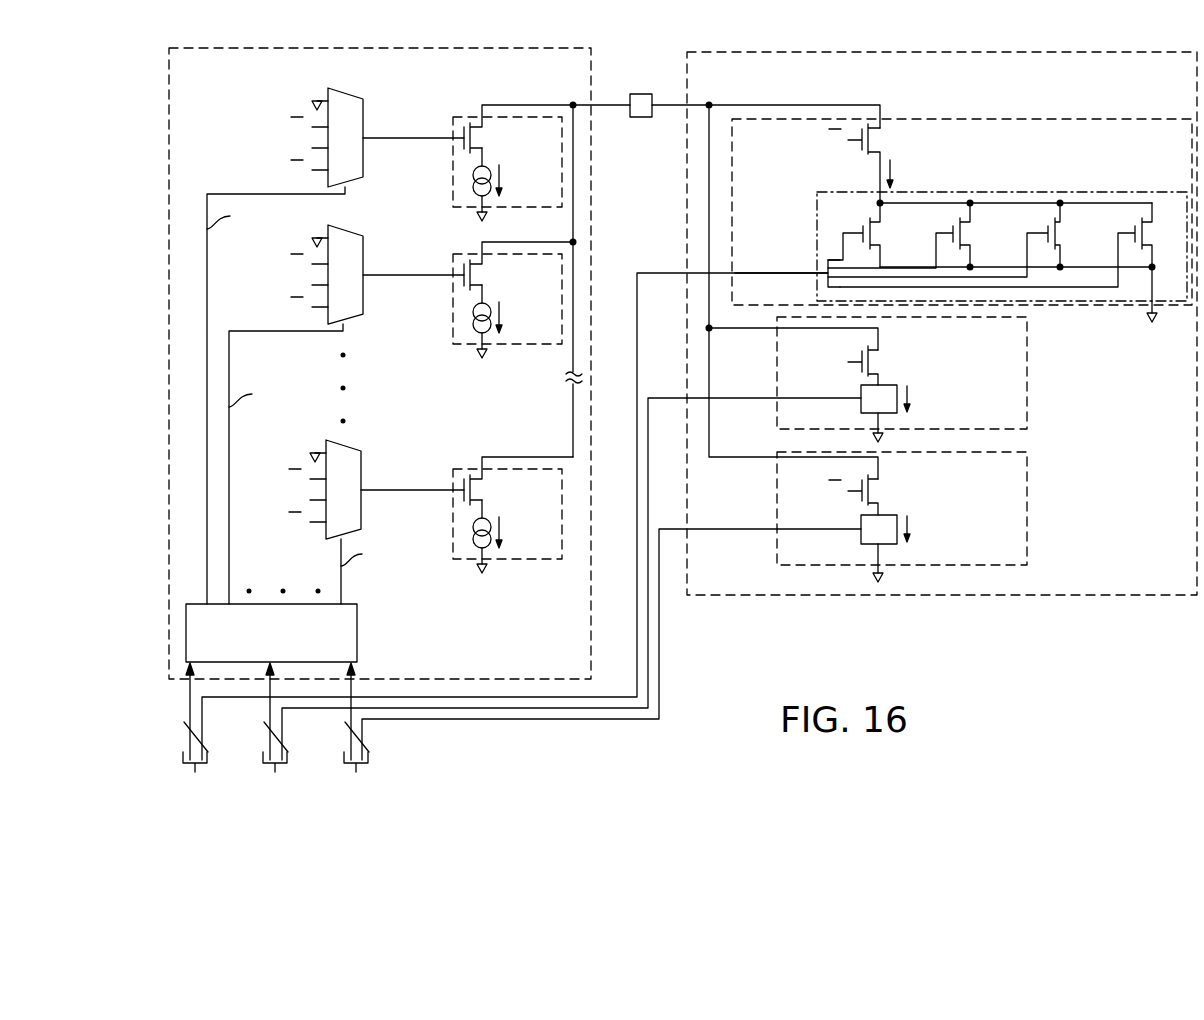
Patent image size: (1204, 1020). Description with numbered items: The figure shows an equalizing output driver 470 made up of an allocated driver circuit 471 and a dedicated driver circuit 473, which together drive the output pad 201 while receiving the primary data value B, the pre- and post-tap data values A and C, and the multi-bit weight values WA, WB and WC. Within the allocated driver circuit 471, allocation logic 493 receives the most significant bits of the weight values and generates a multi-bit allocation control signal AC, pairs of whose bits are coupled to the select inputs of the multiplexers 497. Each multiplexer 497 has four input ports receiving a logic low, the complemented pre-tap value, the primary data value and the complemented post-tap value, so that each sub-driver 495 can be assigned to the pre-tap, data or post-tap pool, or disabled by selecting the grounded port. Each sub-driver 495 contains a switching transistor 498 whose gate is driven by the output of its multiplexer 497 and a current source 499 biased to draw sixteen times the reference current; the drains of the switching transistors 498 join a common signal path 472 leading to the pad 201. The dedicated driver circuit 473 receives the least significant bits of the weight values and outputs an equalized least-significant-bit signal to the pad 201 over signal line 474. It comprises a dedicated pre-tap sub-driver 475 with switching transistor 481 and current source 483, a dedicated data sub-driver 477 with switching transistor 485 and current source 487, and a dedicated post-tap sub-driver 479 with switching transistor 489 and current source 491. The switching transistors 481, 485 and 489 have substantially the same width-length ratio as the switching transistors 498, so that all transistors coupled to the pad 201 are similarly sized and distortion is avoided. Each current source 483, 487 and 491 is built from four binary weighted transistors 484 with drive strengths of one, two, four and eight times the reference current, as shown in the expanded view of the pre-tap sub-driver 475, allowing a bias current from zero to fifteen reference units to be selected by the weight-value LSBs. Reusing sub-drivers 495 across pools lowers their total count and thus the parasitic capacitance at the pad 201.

The equalizing output driver 470 is at (1006, 643).
The allocated driver circuit 471 is at (380, 363).
The signal path 472 is at (569, 103).
The dedicated driver circuit 473 is at (942, 323).
The signal line 474 is at (764, 104).
The dedicated pre-tap sub-driver 475 is at (1060, 119).
The dedicated data sub-driver 477 is at (1027, 368).
The dedicated post-tap sub-driver 479 is at (1027, 458).
The switching transistor 481 is at (880, 136).
The current source 483 is at (1105, 192).
The binary weighted transistor 484 is at (880, 226).
The switching transistor 485 is at (878, 357).
The current source 487 is at (860, 402).
The switching transistor 489 is at (878, 486).
The current source 491 is at (860, 532).
The allocation logic 493 is at (359, 637).
The sub-driver 495 is at (534, 207).
The multiplexer 497 is at (365, 113).
The switching transistor 498 is at (478, 132).
The current source 499 is at (490, 168).
The pad 201 is at (641, 94).